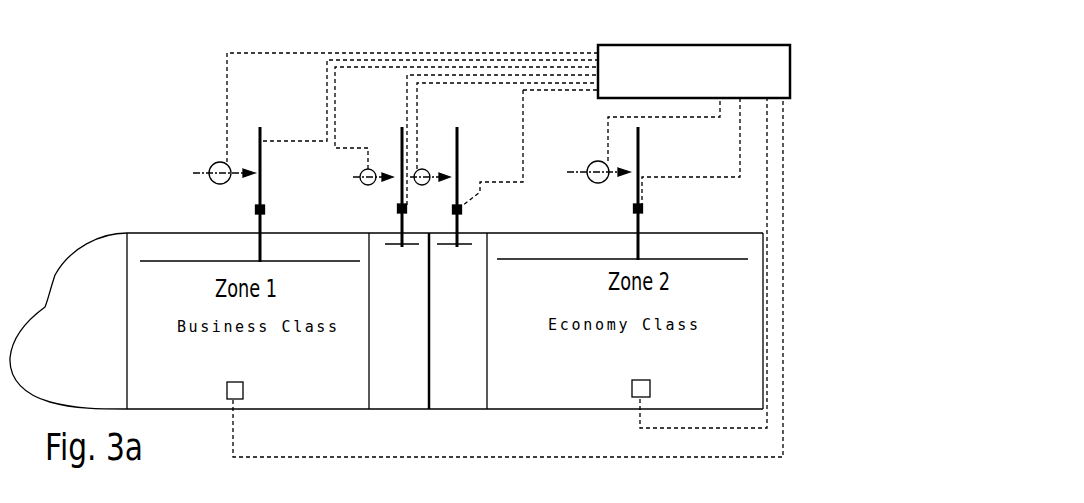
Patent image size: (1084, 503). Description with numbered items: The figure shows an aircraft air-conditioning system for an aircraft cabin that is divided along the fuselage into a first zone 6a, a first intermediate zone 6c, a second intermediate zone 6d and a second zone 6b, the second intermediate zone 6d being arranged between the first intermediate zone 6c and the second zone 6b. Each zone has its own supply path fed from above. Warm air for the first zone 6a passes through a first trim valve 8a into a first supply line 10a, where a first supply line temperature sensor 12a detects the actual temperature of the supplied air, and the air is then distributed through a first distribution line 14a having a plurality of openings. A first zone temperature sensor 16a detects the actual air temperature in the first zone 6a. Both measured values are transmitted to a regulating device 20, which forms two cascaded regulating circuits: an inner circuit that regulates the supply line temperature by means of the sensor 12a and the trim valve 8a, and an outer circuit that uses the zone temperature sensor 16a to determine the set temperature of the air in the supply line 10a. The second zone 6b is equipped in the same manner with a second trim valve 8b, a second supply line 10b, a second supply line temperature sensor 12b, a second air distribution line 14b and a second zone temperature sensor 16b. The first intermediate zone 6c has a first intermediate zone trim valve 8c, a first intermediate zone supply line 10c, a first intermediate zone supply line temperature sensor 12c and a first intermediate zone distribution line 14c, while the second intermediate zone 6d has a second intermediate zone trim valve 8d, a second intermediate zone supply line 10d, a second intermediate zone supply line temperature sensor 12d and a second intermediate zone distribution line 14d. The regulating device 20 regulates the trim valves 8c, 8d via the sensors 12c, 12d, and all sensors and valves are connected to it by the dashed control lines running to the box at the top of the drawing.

The regulating device 20 is at (697, 45).
The first zone 6a is at (157, 410).
The second zone 6b is at (538, 410).
The first intermediate zone 6c is at (378, 410).
The second intermediate zone 6d is at (475, 410).
The first trim valve 8a is at (218, 162).
The second trim valve 8b is at (596, 161).
The first intermediate zone trim valve 8c is at (361, 172).
The second intermediate zone trim valve 8d is at (421, 169).
The first supply line 10a is at (262, 133).
The second supply line 10b is at (640, 133).
The first intermediate zone supply line 10c is at (400, 143).
The second intermediate zone supply line 10d is at (459, 142).
The first supply line temperature sensor 12a is at (254, 210).
The second supply line temperature sensor 12b is at (643, 209).
The first intermediate zone supply line temperature sensor 12c is at (397, 209).
The second intermediate zone supply line temperature sensor 12d is at (462, 206).
The first distribution line 14a is at (155, 261).
The second air distribution line 14b is at (577, 259).
The first intermediate zone distribution line 14c is at (410, 243).
The second intermediate zone distribution line 14d is at (466, 243).
The first zone temperature sensor 16a is at (243, 390).
The second zone temperature sensor 16b is at (650, 389).